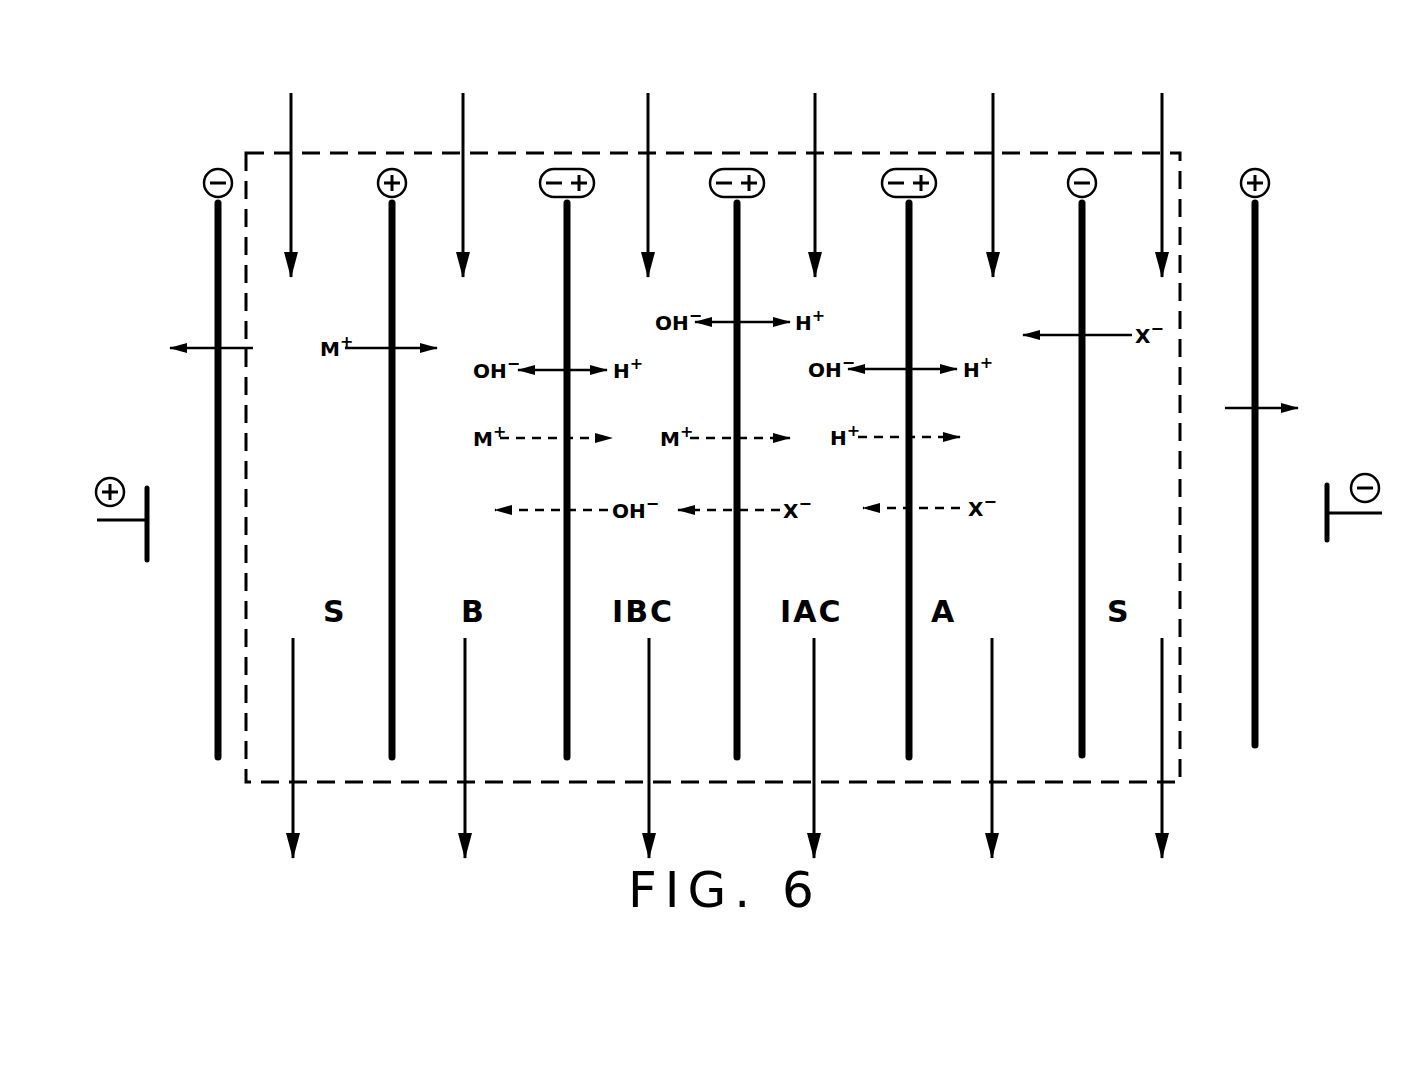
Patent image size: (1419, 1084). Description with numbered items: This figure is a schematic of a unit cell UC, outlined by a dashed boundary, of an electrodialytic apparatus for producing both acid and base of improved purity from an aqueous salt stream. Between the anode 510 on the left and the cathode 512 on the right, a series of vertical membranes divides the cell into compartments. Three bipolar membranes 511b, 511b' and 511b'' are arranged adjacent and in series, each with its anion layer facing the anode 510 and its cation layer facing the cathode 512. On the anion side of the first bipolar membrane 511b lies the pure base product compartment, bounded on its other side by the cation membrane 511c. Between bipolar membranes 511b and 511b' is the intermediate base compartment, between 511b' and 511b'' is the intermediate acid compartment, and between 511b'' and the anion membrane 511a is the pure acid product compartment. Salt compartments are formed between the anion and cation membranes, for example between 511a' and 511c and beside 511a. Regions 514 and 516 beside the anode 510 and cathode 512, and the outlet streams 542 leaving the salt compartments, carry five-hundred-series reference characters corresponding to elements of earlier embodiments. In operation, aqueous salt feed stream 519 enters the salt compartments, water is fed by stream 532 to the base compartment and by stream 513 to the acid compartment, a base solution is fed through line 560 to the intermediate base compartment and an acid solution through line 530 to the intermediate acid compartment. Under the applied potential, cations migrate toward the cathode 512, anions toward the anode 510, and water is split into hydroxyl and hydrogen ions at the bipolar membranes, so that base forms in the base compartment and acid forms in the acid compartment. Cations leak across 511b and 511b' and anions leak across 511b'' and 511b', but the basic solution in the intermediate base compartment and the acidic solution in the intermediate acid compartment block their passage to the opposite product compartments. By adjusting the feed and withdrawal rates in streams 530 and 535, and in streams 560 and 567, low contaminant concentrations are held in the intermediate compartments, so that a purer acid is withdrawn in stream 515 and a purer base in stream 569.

The anode 510 is at (145, 536).
The cathode 512 is at (1329, 525).
The acid compartment feed stream 513 is at (993, 124).
The anode compartment 514 is at (198, 462).
The acid product stream 515 is at (992, 806).
The cathode compartment 516 is at (1320, 388).
The aqueous salt feed stream 519 is at (291, 124).
The intermediate acid compartment feed line 530 is at (815, 122).
The base compartment feed stream 532 is at (463, 118).
The intermediate acid compartment withdrawal stream 535 is at (814, 808).
The depleted salt stream 542 is at (293, 805).
The intermediate base compartment feed line 560 is at (648, 112).
The intermediate base compartment withdrawal stream 567 is at (649, 808).
The base product stream 569 is at (465, 805).
The anion membrane 511a is at (1054, 462).
The anion membrane 511a' is at (181, 463).
The first bipolar membrane 511b is at (540, 463).
The second bipolar membrane 511b' is at (720, 463).
The third bipolar membrane 511b'' is at (884, 463).
The cation membrane 511c is at (392, 276).
The unit cell UC is at (1180, 153).